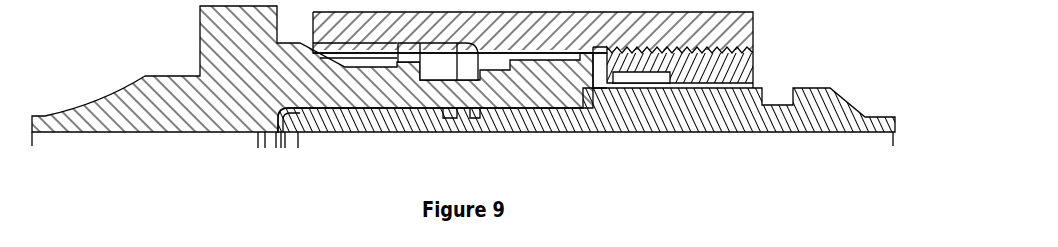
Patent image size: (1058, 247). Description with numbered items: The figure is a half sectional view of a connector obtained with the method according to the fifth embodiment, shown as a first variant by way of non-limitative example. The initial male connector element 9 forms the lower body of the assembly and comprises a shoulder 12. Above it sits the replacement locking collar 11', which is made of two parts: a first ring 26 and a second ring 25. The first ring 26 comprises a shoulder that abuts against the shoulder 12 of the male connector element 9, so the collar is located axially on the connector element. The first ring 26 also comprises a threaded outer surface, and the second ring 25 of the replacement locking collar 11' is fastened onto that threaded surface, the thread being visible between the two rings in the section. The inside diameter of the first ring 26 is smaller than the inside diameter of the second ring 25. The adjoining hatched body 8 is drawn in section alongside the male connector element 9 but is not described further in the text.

The housing body 8 is at (188, 128).
The initial male connector element 9 is at (629, 129).
The replacement locking collar 11' is at (623, 45).
The shoulder 12 is at (677, 88).
The second ring 25 is at (712, 27).
The first ring 26 is at (742, 68).